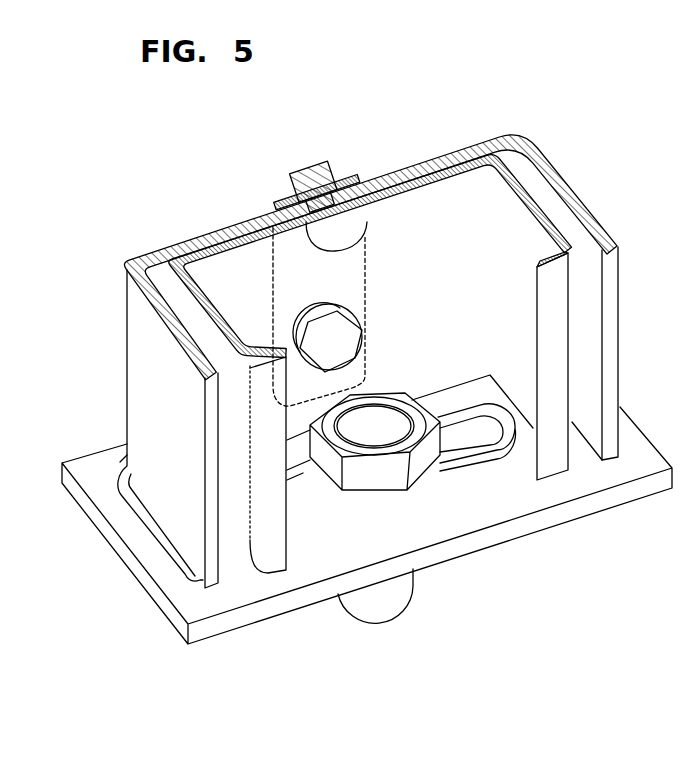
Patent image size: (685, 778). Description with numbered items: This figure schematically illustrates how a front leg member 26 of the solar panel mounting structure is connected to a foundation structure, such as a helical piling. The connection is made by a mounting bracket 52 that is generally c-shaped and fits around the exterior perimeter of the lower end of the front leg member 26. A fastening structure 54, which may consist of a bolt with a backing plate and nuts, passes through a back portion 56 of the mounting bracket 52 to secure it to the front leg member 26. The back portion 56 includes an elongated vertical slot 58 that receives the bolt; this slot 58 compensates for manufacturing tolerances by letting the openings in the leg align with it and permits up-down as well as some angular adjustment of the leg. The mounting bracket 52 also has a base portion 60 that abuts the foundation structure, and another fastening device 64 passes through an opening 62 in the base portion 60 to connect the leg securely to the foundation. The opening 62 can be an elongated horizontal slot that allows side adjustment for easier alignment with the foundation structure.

The front leg member 26 is at (558, 356).
The mounting bracket 52 is at (180, 509).
The fastening structure 54 is at (340, 235).
The back portion 56 is at (420, 163).
The elongated vertical slot 58 is at (273, 283).
The base portion 60 is at (555, 498).
The opening 62 is at (303, 470).
The fastening device 64 is at (403, 457).